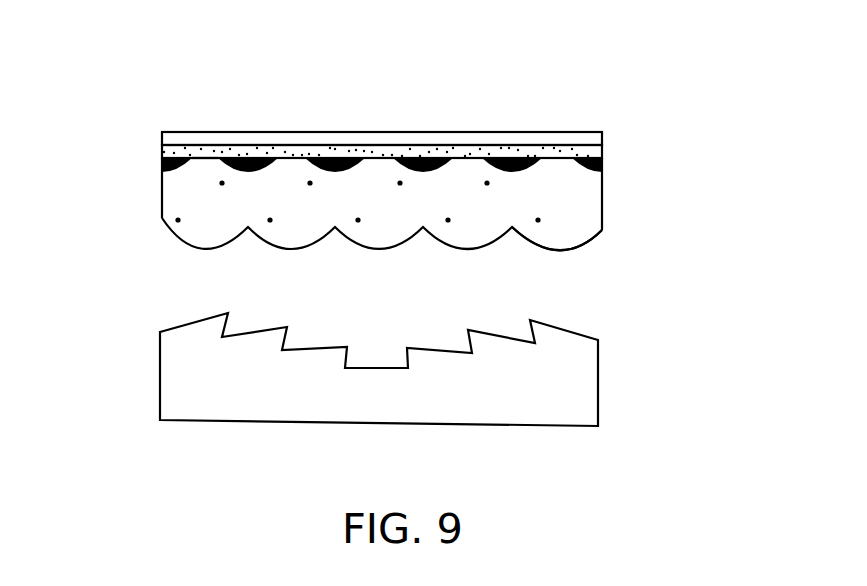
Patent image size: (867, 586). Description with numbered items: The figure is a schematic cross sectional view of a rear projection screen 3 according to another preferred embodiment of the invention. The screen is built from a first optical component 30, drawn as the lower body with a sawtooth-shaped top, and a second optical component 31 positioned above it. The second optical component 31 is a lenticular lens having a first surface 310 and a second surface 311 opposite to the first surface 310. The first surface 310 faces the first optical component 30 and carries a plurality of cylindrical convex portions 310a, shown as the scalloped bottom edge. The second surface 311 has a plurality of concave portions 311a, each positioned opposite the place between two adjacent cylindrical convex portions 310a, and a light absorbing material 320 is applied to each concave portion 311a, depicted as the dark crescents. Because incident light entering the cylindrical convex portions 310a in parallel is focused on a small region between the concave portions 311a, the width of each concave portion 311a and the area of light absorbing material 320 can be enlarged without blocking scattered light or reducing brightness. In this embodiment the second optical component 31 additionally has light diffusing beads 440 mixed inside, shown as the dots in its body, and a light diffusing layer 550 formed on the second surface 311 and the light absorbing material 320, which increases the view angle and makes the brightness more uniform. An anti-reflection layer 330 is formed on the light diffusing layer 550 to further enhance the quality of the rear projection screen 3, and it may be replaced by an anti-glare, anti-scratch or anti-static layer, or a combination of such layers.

The rear projection screen 3 is at (72, 23).
The first optical component 30 is at (160, 383).
The second optical component 31 is at (162, 188).
The first surface 310 is at (175, 238).
The cylindrical convex portions 310a is at (565, 243).
The second surface 311 is at (545, 160).
The concave portions 311a is at (213, 148).
The light absorbing material 320 is at (328, 148).
The anti-reflection layer 330 is at (600, 143).
The light diffusing beads 440 is at (578, 192).
The light diffusing layer 550 is at (162, 152).